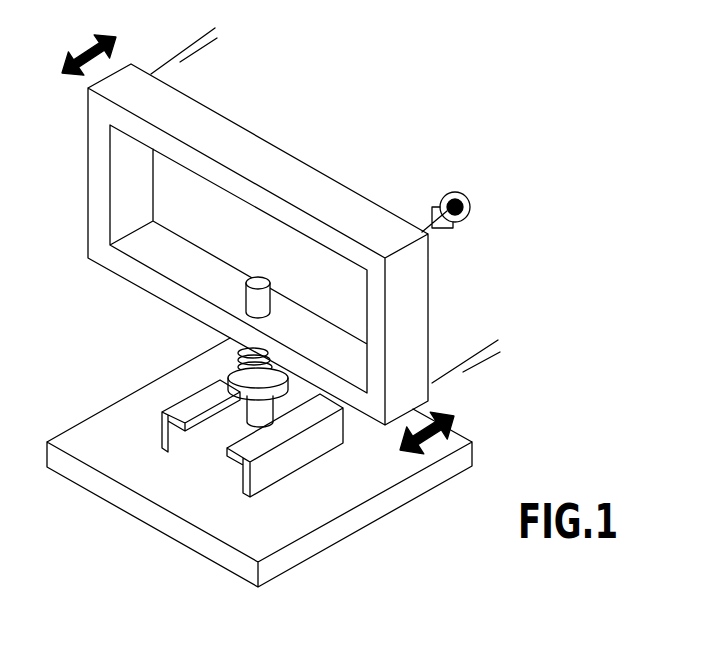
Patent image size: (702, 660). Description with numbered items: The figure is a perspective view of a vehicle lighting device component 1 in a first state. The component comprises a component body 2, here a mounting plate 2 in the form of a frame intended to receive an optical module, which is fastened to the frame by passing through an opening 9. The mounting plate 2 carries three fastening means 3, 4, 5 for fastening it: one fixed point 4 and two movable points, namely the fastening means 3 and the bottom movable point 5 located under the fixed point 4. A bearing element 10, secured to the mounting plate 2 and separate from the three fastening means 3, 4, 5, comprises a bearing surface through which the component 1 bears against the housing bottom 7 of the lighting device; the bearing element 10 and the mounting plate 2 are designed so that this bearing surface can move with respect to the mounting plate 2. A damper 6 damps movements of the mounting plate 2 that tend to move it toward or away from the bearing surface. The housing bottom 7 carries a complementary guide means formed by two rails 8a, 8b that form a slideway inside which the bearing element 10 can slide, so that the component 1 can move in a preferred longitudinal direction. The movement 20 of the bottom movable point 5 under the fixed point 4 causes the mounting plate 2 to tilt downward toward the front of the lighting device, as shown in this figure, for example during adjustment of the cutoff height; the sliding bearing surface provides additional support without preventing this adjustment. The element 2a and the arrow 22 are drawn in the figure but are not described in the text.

The vehicle lighting device component 1 is at (96, 294).
The component body 2 is at (265, 152).
The cylindrical element on frame 2a is at (283, 317).
The fastening means 3 is at (192, 37).
The fixed point 4 is at (452, 192).
The fastening means 5 is at (466, 360).
The damper 6 is at (224, 353).
The housing bottom 7 is at (342, 502).
The rail 8a is at (265, 473).
The rail 8b is at (164, 421).
The opening 9 is at (167, 178).
The bearing element 10 is at (278, 413).
The movement 20 is at (448, 413).
The direction arrow 22 is at (85, 47).